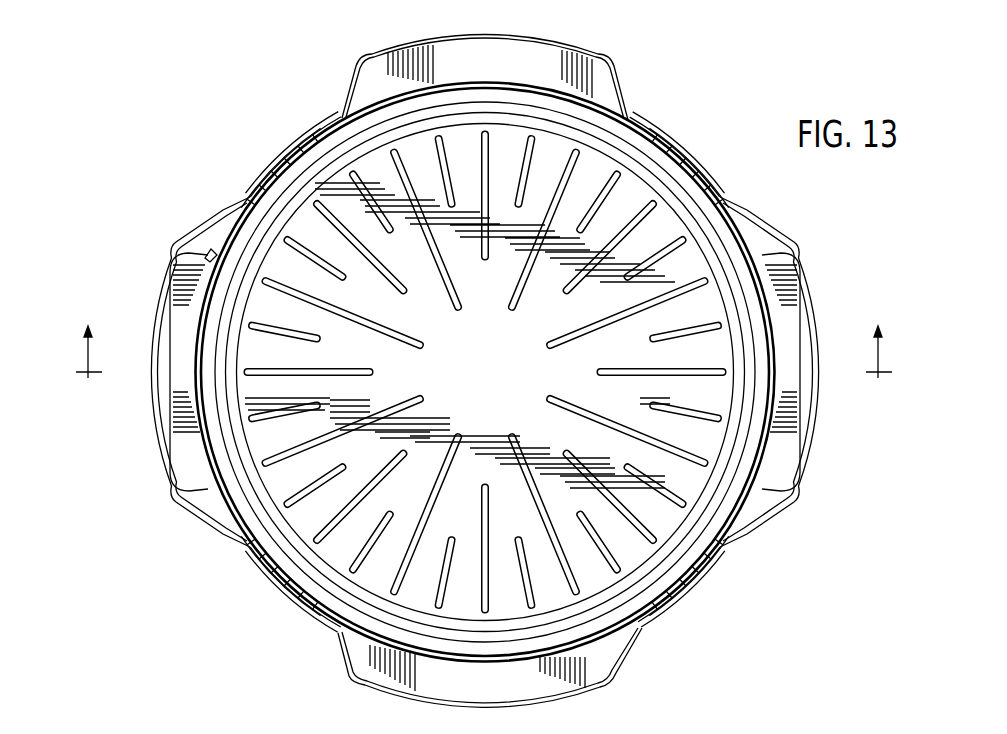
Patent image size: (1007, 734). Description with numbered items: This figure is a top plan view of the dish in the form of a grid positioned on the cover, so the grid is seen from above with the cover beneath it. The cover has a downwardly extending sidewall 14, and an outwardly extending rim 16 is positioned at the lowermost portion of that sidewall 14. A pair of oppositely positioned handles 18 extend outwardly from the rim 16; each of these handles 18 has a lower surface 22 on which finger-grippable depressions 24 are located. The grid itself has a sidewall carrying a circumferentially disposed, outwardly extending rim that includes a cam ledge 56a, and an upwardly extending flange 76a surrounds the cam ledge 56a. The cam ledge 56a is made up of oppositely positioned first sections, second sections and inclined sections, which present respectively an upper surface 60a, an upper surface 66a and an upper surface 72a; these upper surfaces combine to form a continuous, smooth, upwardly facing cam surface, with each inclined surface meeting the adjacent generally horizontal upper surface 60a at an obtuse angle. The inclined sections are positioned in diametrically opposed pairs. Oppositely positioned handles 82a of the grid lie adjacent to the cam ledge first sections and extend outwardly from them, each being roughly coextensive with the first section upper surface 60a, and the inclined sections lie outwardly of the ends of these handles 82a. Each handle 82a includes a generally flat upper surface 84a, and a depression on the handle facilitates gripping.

The sidewall 14 is at (484, 338).
The rim 16 is at (318, 123).
The handles 18 is at (158, 297).
The lower surface 22 is at (175, 266).
The finger-grippable depressions 24 is at (208, 254).
The cam ledge 56a is at (722, 233).
The upper surface of first section 60a is at (505, 648).
The upper surface of second section 66a is at (208, 330).
The upper surface of inclined section 72a is at (288, 178).
The flange 76a is at (246, 548).
The handles 82a is at (505, 37).
The upper surface of handle 84a is at (583, 72).